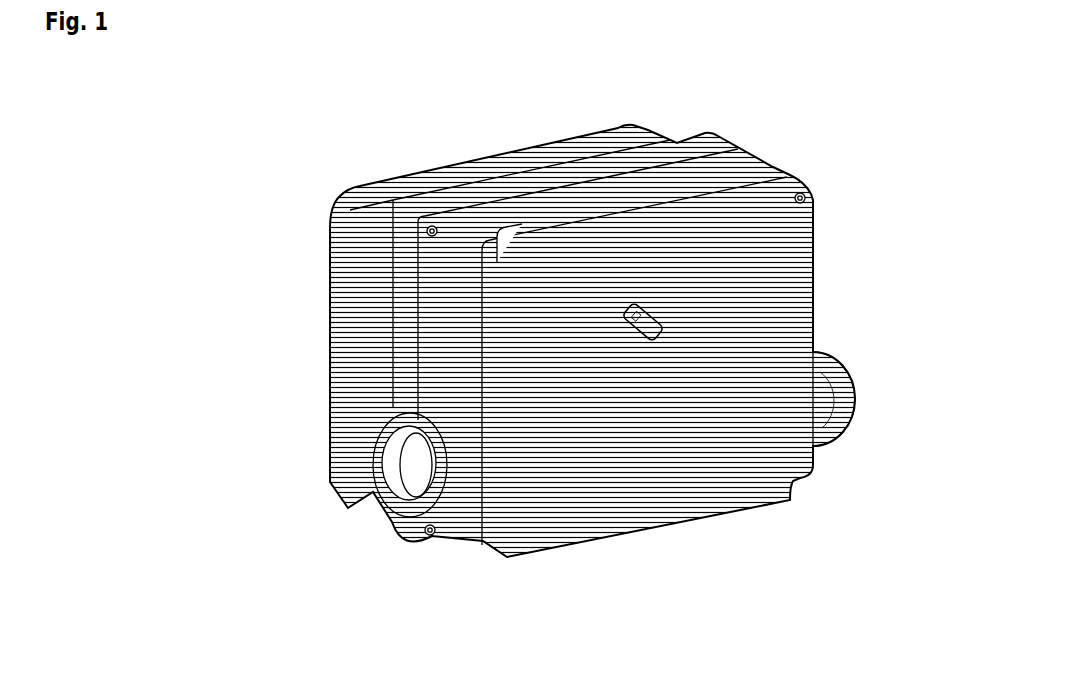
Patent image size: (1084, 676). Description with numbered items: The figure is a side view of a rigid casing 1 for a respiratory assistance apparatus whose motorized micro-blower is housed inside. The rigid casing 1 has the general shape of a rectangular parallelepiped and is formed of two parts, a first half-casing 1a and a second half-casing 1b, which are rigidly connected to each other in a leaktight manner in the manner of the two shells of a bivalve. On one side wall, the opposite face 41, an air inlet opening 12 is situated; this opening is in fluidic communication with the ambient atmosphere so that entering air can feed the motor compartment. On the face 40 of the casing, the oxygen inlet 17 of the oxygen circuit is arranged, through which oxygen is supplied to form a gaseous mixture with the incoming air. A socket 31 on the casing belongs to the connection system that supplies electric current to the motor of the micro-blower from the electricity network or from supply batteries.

The rigid casing 1 is at (832, 140).
The first half-casing 1a is at (810, 273).
The second half-casing 1b is at (478, 157).
The air inlet opening 12 is at (415, 462).
The oxygen inlet 17 is at (856, 396).
The socket 31 is at (650, 336).
The face of the casing 40 is at (822, 318).
The opposite face 41 is at (357, 358).